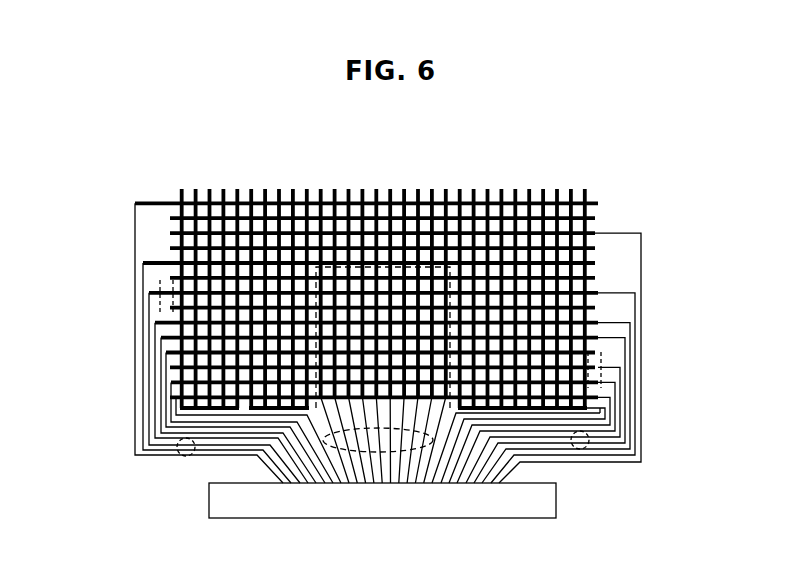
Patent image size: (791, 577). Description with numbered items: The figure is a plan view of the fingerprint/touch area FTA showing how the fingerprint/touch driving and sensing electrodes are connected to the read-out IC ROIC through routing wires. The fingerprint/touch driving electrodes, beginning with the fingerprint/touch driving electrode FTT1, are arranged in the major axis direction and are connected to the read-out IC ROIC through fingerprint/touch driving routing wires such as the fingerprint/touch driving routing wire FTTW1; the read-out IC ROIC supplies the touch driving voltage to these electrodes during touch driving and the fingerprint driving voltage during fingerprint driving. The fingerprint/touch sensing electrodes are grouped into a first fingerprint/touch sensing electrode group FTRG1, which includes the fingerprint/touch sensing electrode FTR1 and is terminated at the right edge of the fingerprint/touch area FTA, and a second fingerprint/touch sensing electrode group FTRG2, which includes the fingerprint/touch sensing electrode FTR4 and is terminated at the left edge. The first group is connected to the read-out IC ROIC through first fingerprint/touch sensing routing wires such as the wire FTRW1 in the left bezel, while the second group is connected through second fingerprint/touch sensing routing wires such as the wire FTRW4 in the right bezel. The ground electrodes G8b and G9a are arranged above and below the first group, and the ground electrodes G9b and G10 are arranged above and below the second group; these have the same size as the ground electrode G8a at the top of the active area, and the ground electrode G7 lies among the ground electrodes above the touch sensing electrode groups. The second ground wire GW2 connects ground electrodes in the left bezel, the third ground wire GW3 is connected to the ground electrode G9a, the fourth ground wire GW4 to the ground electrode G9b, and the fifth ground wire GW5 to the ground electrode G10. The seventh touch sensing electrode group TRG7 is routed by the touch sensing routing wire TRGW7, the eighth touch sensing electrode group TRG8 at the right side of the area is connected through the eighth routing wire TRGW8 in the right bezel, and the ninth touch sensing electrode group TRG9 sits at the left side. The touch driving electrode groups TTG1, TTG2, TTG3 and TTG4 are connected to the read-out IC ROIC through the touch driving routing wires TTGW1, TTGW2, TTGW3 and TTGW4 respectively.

The fingerprint/touch driving electrode FTT1 is at (447, 185).
The touch sensing electrode group TRG7 is at (168, 221).
The ground electrode G7 is at (593, 200).
The touch sensing routing wire TRGW7 is at (642, 242).
The ground electrode G8a is at (170, 258).
The ground electrode G8b is at (170, 276).
The fingerprint/touch sensing electrode FTR1 is at (147, 295).
The fingerprint/touch sensing electrode group FTRG1 is at (75, 288).
The touch sensing electrode group TRG8 is at (598, 293).
The ground electrode G9a is at (598, 320).
The ground electrode G9b is at (598, 340).
The second ground wire GW2 is at (162, 337).
The touch sensing electrode group TRG9 is at (170, 355).
The fingerprint/touch sensing electrode FTR4 is at (602, 368).
The fingerprint/touch sensing electrode group FTRG2 is at (700, 355).
The third ground wire GW3 is at (165, 386).
The ground electrode G10 is at (172, 398).
The eighth fingerprint/touch sensing routing wire TRGW8 is at (640, 405).
The fourth ground wire GW4 is at (628, 420).
The fifth ground wire GW5 is at (610, 425).
The fingerprint/touch driving routing wire FTTW1 is at (415, 470).
The read-out IC ROIC is at (382, 500).
The first fingerprint/touch sensing routing wire FTRW1 is at (180, 448).
The second fingerprint/touch sensing routing wire FTRW4 is at (583, 447).
The touch driving electrode group TTG1 is at (205, 472).
The touch driving routing wire TTGW1 is at (232, 470).
The touch driving electrode group TTG2 is at (265, 470).
The touch driving routing wire TTGW2 is at (288, 470).
The fingerprint/touch area FTA is at (333, 470).
The touch driving routing wire TTGW3 is at (470, 470).
The touch driving electrode group TTG3 is at (500, 470).
The touch driving routing wire TTGW4 is at (528, 470).
The touch driving electrode group TTG4 is at (567, 470).